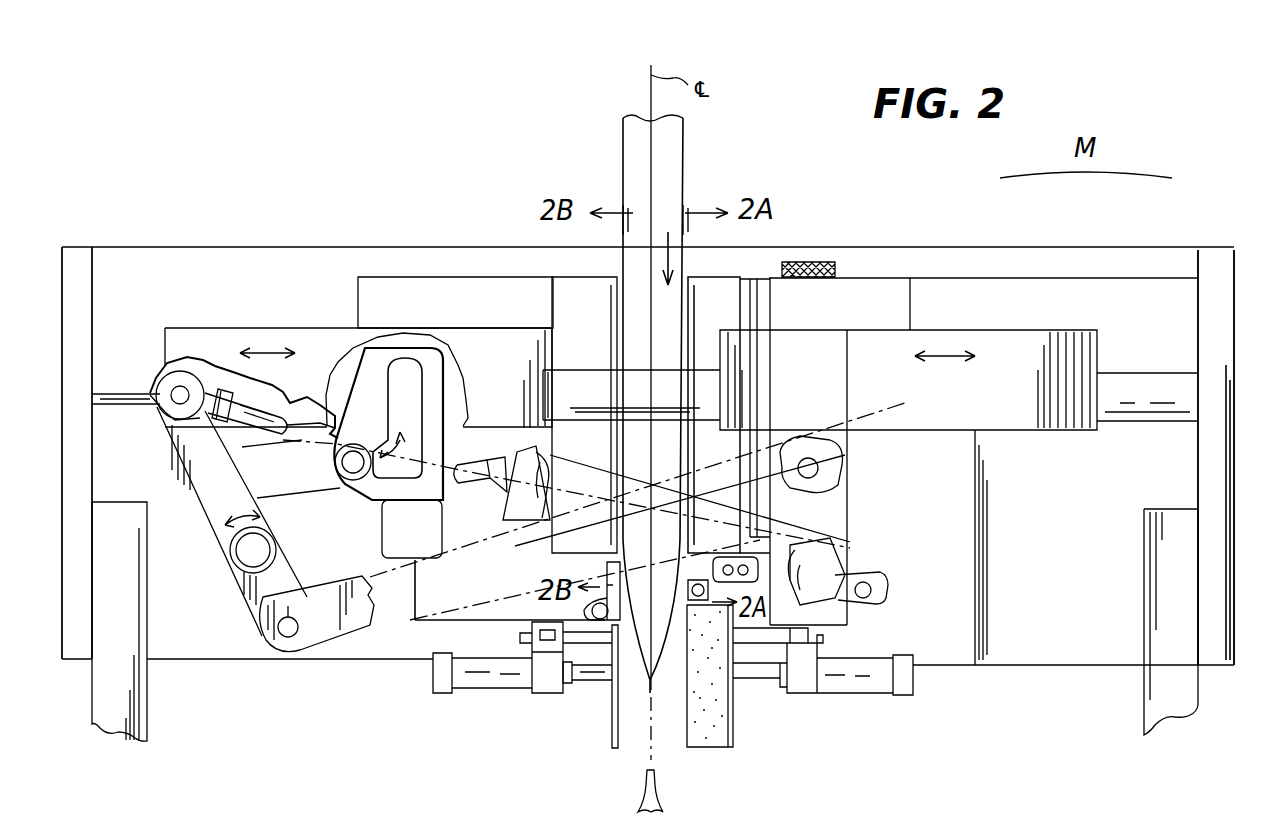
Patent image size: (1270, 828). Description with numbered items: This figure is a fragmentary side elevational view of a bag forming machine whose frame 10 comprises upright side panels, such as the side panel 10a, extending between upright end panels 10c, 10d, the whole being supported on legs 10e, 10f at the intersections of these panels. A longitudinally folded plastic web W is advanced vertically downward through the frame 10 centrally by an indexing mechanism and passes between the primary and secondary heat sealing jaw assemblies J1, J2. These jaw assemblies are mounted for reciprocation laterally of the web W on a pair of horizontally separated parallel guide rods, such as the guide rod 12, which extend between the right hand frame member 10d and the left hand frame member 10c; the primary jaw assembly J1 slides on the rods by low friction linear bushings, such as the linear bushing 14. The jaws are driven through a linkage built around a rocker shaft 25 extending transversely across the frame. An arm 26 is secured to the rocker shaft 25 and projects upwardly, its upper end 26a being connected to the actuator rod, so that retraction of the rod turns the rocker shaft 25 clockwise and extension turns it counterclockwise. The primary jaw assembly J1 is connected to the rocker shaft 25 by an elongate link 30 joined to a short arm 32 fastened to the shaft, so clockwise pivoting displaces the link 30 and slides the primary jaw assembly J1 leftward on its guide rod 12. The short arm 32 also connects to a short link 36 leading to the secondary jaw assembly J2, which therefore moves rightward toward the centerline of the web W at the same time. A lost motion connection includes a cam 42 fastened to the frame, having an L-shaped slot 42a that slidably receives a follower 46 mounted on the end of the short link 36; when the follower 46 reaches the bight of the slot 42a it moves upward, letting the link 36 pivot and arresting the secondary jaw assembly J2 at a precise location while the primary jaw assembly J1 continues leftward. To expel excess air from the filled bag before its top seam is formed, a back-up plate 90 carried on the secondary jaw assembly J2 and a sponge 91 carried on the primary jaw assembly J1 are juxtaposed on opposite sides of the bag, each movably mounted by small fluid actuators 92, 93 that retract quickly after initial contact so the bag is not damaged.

The frame 10 is at (1031, 224).
The upright side panel 10a is at (1123, 265).
The upright end panel 10c is at (80, 248).
The upright end panel 10d is at (1266, 236).
The leg 10e is at (150, 724).
The leg 10f is at (1192, 712).
The guide rod 12 is at (1168, 349).
The linear bushing 14 is at (1004, 350).
The rocker shaft 25 is at (255, 550).
The arm 26 is at (180, 465).
The upper end of arm 26a is at (161, 382).
The elongate link 30 is at (326, 636).
The short arm 32 is at (257, 600).
The short link 36 is at (286, 472).
The cam 42 is at (375, 360).
The L-shaped slot 42a is at (405, 372).
The follower 46 is at (357, 470).
The back-up plate 90 is at (612, 712).
The sponge 91 is at (719, 738).
The fluid actuator 92 is at (510, 680).
The fluid actuator 93 is at (860, 680).
The web W is at (668, 176).
The primary heat sealing jaw assembly J1 is at (742, 283).
The secondary heat sealing jaw assembly J2 is at (549, 292).